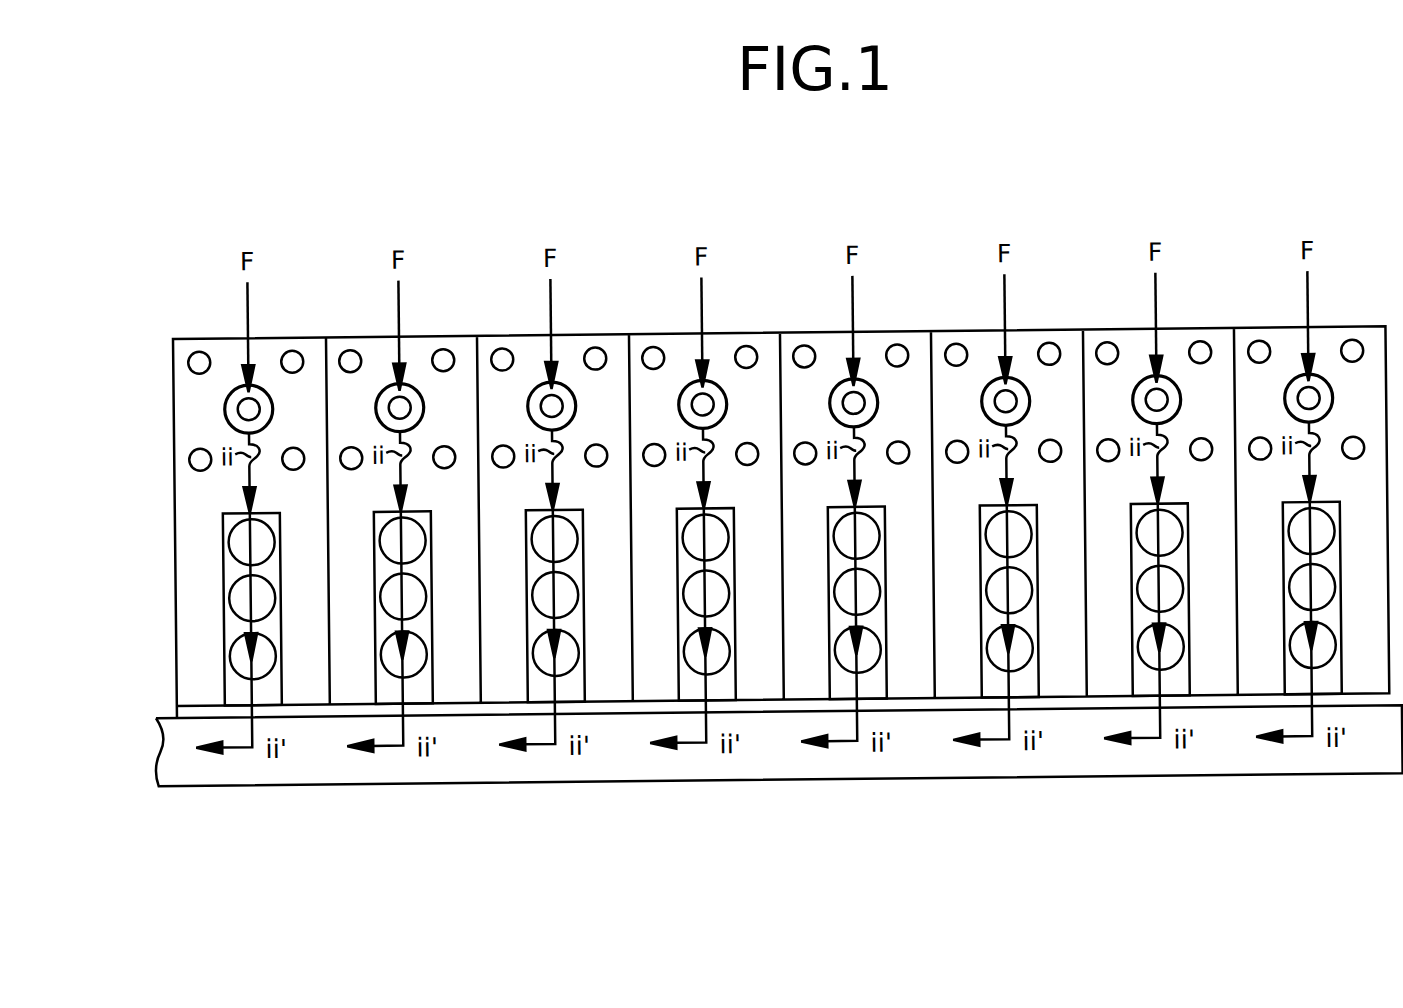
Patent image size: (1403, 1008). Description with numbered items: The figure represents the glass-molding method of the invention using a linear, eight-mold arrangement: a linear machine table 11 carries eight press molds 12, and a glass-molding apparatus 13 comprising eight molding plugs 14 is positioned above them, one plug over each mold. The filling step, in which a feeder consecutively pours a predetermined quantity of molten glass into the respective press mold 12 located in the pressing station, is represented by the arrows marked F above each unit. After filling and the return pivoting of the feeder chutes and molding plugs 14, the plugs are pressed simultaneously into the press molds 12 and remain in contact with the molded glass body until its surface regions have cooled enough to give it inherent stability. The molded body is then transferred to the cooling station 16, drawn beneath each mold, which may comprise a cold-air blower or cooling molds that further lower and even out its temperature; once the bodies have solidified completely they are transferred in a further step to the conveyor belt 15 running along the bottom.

The machine table 11 is at (173, 339).
The press mold 12 is at (756, 404).
The glass-molding apparatus 13 is at (785, 374).
The molding plug 14 is at (807, 398).
The conveyor belt 15 is at (1112, 786).
The cooling station 16 is at (764, 633).